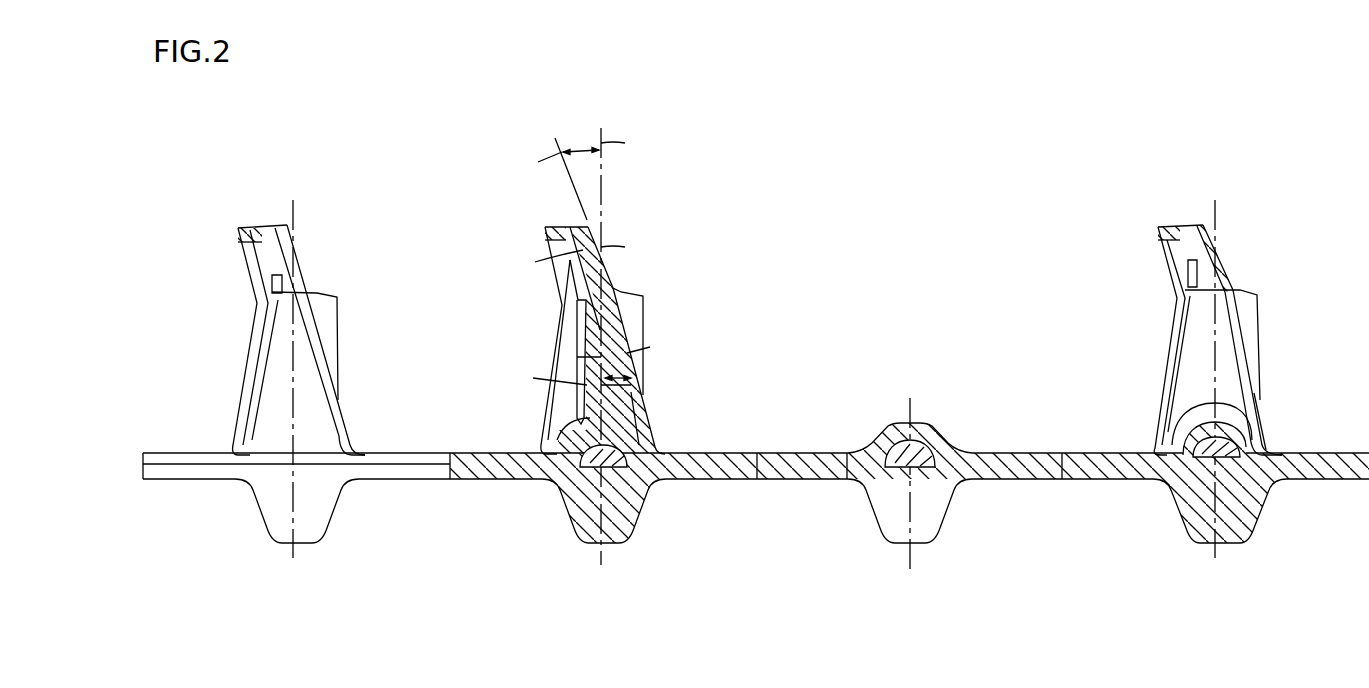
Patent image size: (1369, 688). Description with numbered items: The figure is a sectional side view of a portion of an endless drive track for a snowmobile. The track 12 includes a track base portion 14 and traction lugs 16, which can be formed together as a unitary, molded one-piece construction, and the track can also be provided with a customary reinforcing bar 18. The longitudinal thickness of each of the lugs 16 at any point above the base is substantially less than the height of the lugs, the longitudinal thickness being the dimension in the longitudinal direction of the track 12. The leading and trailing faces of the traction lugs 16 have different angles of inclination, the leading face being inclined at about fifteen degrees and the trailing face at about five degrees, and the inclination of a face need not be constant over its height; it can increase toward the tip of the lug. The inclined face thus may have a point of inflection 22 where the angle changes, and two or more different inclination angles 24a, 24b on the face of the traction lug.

The track 12 is at (1072, 285).
The track base portion 14 is at (1078, 478).
The traction lugs 16 is at (1220, 271).
The reinforcing bar 18 is at (1208, 460).
The point of inflection 22 is at (245, 312).
The inclination angle 24a is at (578, 150).
The inclination angle 24b is at (614, 378).